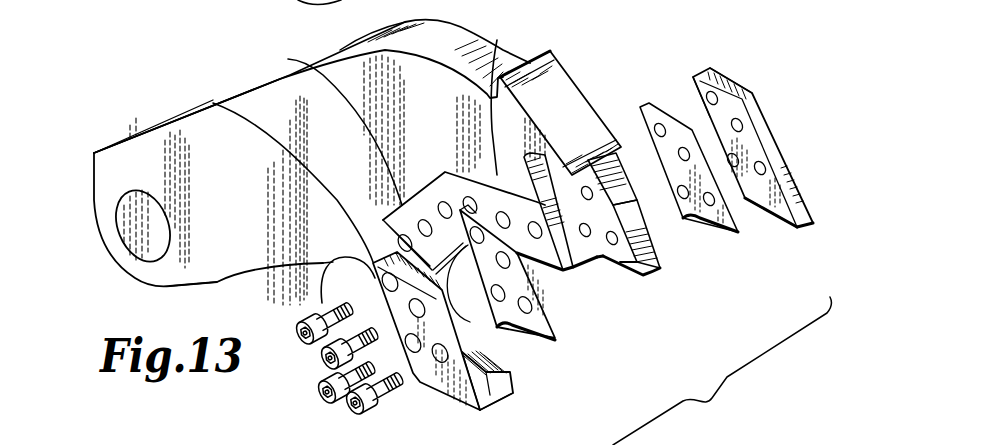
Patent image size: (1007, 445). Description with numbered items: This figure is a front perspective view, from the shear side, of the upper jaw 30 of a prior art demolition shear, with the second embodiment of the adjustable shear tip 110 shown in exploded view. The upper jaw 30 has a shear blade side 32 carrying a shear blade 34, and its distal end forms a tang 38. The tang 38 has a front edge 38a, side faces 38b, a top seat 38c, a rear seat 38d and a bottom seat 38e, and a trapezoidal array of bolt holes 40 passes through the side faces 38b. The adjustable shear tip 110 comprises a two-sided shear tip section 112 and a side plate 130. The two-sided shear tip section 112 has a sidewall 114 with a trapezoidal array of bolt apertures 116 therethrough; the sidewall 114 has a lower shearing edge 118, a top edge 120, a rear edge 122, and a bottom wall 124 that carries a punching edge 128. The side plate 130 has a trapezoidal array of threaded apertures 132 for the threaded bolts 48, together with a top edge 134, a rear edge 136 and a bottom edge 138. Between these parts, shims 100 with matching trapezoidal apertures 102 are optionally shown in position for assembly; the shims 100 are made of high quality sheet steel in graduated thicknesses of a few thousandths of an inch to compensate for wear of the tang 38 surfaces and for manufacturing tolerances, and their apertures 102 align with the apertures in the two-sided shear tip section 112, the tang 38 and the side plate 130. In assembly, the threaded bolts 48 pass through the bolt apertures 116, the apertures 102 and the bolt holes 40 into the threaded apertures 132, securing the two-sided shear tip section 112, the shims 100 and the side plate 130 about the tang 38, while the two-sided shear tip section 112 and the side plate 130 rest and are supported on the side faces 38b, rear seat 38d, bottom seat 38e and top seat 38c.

The upper jaw 30 is at (335, 50).
The shear blade side 32 is at (497, 40).
The shear blade 34 is at (560, 113).
The tang 38 is at (660, 272).
The front edge 38a is at (545, 261).
The side faces 38b is at (633, 265).
The top seat 38c is at (623, 158).
The rear seat 38d is at (573, 263).
The bottom seat 38e is at (610, 265).
The bolt holes 40 is at (636, 231).
The threaded bolts 48 is at (322, 408).
The shims 100 is at (300, 60).
The trapezoidal apertures 102 is at (741, 216).
The adjustable shear tip 110 is at (500, 398).
The two-sided shear tip section 112 is at (471, 381).
The sidewall 114 is at (441, 375).
The bolt apertures 116 is at (217, 282).
The lower shearing edge 118 is at (465, 412).
The top edge 120 is at (213, 102).
The rear edge 122 is at (321, 303).
The bottom wall 124 is at (513, 395).
The punching edge 128 is at (496, 401).
The side plate 130 is at (771, 122).
The threaded apertures 132 is at (763, 170).
The top edge 134 is at (742, 74).
The rear edge 136 is at (697, 110).
The bottom edge 138 is at (790, 234).